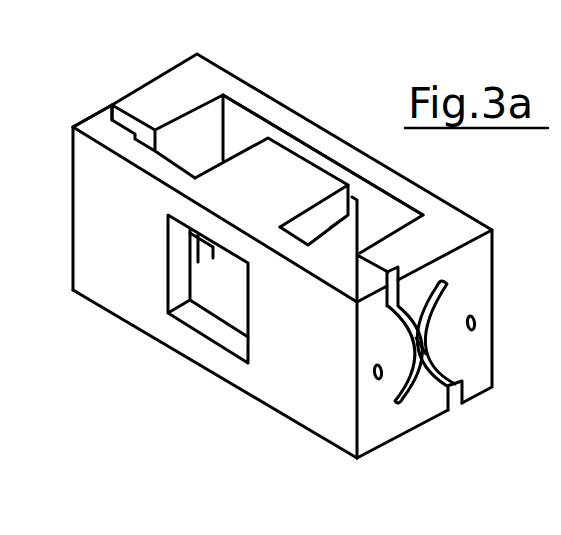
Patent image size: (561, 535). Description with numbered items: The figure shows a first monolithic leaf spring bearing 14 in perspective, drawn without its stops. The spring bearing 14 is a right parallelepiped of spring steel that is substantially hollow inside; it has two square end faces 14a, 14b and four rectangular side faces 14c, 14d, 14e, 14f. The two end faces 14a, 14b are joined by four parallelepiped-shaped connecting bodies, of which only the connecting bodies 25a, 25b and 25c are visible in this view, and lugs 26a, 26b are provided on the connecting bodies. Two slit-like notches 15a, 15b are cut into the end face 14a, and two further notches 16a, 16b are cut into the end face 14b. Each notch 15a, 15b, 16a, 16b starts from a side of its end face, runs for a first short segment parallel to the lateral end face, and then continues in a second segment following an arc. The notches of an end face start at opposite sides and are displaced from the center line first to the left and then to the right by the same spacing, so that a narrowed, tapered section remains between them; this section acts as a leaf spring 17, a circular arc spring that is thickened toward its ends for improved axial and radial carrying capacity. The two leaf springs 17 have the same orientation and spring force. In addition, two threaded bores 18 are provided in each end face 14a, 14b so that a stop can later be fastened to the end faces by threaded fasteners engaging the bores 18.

The spring bearing 14 is at (502, 292).
The end face 14a is at (476, 372).
The end face 14b is at (128, 92).
The side face 14c is at (336, 128).
The side face 14d is at (95, 256).
The side face 14e is at (460, 196).
The side face 14f is at (275, 412).
The notch 15a is at (455, 398).
The notch 15b is at (378, 290).
The notch 16a is at (250, 263).
The notch 16b is at (108, 108).
The leaf spring 17 is at (422, 352).
The threaded bore 18 is at (380, 380).
The connecting body 25a is at (345, 172).
The connecting body 25b is at (220, 325).
The connecting body 25c is at (227, 363).
The lug 26a is at (282, 192).
The lug 26b is at (239, 247).